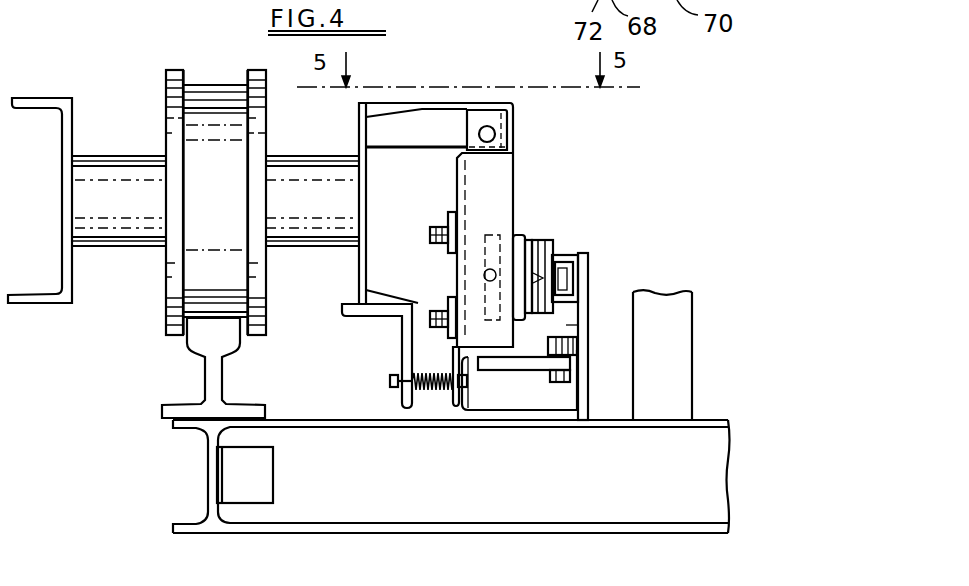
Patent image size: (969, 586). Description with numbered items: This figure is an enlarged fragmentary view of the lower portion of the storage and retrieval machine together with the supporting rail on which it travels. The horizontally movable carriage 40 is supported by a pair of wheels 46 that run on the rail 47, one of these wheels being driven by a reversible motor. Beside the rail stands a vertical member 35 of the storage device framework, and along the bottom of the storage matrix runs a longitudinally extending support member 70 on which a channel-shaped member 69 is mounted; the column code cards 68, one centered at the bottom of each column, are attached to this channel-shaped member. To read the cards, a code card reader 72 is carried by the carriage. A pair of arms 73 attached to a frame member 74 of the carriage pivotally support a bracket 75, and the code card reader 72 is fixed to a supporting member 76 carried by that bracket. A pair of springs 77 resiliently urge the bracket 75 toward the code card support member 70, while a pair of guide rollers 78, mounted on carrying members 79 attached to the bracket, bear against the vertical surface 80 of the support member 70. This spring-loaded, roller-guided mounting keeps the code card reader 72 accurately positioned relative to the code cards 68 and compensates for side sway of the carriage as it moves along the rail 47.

The vertical member 35 is at (688, 349).
The carriage 40 is at (44, 95).
The wheel 46 is at (178, 68).
The rail 47 is at (222, 374).
The column code card 68 is at (538, 240).
The channel-shaped member 69 is at (567, 253).
The support member 70 is at (588, 282).
The code card reader 72 is at (521, 235).
The arm 73 is at (442, 103).
The frame member 74 is at (397, 103).
The bracket 75 is at (516, 170).
The supporting member 76 is at (453, 250).
The spring 77 is at (445, 375).
The guide roller 78 is at (570, 348).
The carrying member 79 is at (497, 373).
The vertical surface 80 is at (566, 322).